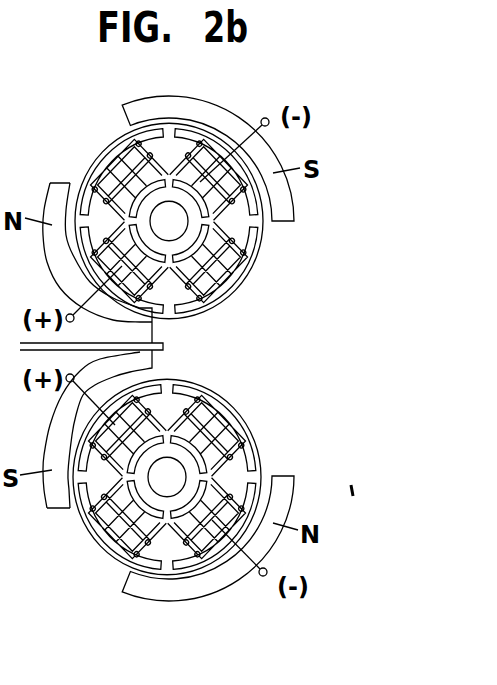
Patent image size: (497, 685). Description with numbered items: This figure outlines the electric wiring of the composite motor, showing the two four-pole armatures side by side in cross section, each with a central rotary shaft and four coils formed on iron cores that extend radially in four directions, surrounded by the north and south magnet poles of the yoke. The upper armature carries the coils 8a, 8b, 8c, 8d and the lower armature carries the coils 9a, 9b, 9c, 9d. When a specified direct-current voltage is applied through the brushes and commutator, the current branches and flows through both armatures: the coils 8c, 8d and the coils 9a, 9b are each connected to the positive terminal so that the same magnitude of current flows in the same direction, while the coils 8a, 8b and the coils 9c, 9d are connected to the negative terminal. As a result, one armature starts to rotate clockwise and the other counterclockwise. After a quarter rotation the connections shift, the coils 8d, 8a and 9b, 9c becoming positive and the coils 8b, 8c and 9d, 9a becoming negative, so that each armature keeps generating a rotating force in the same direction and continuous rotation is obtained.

The coil 8a is at (223, 277).
The coil 8b is at (218, 152).
The coil 8c is at (110, 170).
The coil 8d is at (100, 270).
The coil 9a is at (220, 412).
The coil 9b is at (215, 542).
The coil 9c is at (100, 532).
The coil 9d is at (97, 428).